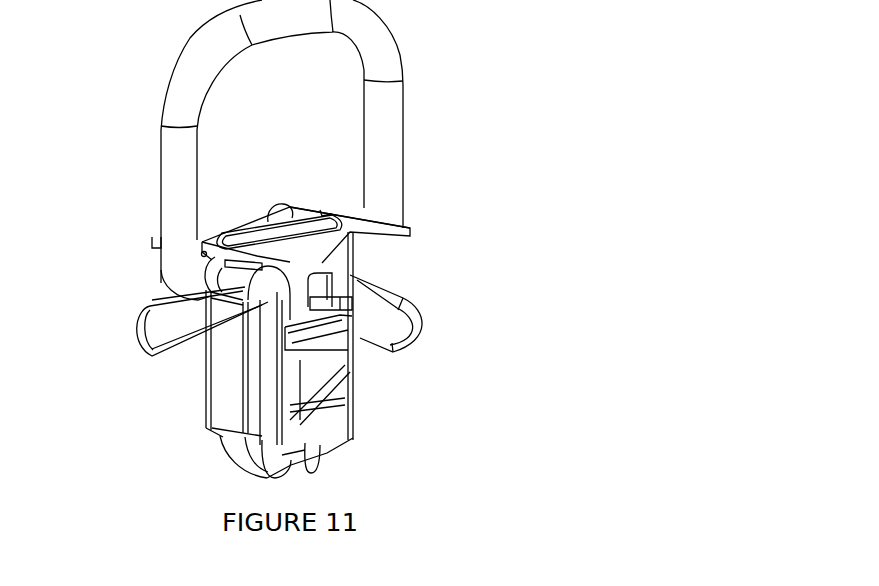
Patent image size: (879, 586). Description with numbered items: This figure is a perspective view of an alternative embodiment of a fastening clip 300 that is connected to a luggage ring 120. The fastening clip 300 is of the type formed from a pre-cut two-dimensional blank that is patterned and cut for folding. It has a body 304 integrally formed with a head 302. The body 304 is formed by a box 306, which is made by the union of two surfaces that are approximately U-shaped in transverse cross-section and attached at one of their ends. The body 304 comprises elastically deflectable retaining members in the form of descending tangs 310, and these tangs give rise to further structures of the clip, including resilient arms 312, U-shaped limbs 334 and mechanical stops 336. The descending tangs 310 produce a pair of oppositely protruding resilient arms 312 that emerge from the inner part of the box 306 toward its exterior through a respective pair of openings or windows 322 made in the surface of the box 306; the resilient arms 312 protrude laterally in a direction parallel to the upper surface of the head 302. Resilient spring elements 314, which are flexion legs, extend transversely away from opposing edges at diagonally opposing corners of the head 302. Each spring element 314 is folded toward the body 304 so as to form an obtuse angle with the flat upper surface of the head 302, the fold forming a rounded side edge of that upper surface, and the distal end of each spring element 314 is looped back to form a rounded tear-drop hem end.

The luggage ring 120 is at (190, 73).
The fastening clip 300 is at (403, 374).
The head 302 is at (253, 215).
The body 304 is at (212, 453).
The box 306 is at (203, 408).
The descending tangs 310 is at (203, 368).
The resilient arms 312 is at (340, 298).
The resilient spring elements 314 is at (152, 330).
The openings or windows 322 is at (325, 272).
The U-shaped limbs 334 is at (352, 372).
The mechanical stops 336 is at (320, 417).